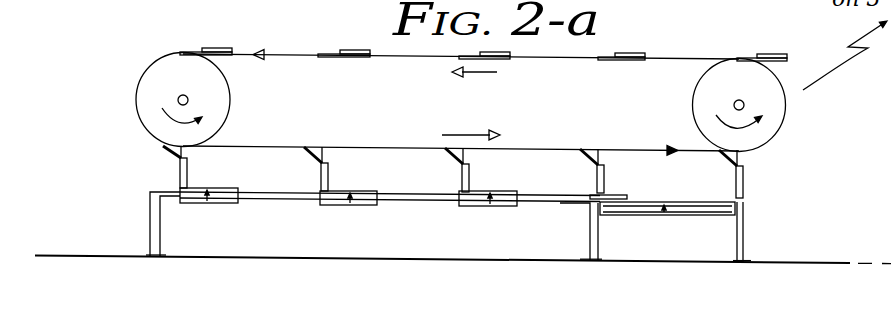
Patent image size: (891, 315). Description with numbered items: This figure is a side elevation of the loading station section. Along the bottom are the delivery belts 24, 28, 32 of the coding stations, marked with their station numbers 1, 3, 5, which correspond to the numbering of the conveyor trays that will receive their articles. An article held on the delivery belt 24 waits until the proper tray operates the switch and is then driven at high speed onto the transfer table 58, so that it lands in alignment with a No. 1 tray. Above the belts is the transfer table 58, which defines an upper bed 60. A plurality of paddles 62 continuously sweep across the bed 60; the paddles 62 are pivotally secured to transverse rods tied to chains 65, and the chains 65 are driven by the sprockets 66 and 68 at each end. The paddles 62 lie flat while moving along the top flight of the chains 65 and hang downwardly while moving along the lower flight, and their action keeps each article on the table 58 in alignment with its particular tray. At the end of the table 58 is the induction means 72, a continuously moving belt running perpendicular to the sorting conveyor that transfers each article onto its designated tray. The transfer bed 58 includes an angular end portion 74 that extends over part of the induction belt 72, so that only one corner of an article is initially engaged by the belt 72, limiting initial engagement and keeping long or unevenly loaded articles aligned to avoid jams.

The No. 1 coding station number 1 is at (218, 222).
The No. 3 coding station number 3 is at (348, 187).
The No. 5 coding station number 5 is at (488, 187).
The delivery belt 24 is at (209, 204).
The delivery belt 28 is at (355, 206).
The delivery belt 32 is at (490, 206).
The transfer table 58 is at (280, 205).
The upper bed 60 is at (285, 190).
The paddles 62 is at (358, 48).
The chains 65 is at (362, 150).
The sprocket 66 is at (172, 72).
The sprocket 68 is at (775, 112).
The induction means 72 is at (685, 201).
The angular end portion 74 is at (620, 196).